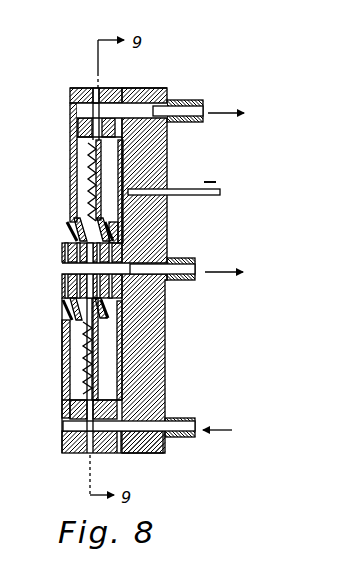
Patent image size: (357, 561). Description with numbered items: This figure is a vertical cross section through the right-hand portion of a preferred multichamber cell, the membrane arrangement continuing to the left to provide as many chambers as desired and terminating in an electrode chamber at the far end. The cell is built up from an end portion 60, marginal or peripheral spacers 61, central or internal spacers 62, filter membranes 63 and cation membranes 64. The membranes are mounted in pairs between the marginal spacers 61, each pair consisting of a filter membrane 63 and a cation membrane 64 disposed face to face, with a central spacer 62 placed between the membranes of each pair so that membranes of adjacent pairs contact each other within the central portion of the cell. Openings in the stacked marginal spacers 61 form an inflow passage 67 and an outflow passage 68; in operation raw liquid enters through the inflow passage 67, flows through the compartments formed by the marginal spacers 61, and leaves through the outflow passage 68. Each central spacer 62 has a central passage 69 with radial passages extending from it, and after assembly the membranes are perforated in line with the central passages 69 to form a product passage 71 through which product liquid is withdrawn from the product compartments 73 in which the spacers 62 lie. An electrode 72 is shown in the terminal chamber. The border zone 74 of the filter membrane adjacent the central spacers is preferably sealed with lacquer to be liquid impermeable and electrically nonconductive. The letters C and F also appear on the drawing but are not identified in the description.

The end portion 60 is at (153, 339).
The marginal spacer 61 is at (128, 99).
The central spacer 62 is at (66, 299).
The filter membrane 63 is at (72, 207).
The cation membrane 64 is at (87, 150).
The inflow passage 67 is at (173, 429).
The outflow passage 68 is at (183, 106).
The central passage 69 is at (66, 264).
The product passage 71 is at (188, 258).
The electrode 72 is at (133, 164).
The product compartment 73 is at (66, 315).
The border zone 74 is at (68, 228).
The chamber C is at (95, 88).
The fluid passage F is at (100, 88).